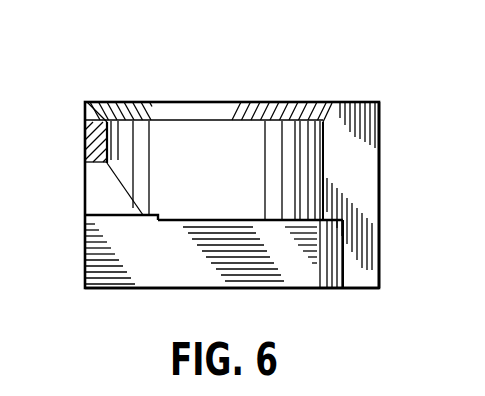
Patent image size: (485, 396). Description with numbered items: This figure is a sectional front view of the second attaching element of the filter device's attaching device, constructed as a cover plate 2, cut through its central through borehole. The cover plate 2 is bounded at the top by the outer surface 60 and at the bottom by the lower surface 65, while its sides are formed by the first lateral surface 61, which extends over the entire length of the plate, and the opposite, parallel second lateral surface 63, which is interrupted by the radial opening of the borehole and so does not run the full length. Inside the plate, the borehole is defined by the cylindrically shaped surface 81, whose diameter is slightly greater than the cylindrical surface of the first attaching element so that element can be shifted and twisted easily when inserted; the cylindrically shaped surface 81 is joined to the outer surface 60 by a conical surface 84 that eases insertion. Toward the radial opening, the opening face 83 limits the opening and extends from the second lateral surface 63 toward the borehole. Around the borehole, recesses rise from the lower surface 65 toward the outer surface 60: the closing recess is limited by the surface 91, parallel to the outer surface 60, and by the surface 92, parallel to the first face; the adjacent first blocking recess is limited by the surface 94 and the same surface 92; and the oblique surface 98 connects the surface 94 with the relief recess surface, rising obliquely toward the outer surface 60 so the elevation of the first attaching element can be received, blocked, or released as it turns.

The cover plate 2 is at (104, 66).
The outer surface 60 is at (207, 101).
The conical surface 84 is at (233, 108).
The first lateral surface 61 is at (85, 153).
The oblique surface 98 is at (105, 192).
The cylindrically shaped surface 81 is at (221, 167).
The opening face 83 is at (364, 181).
The surface of first blocking recess 94 is at (156, 214).
The surface of closing recess 91 is at (221, 218).
The surface parallel to first face 92 is at (180, 266).
The lower surface 65 is at (222, 289).
The second lateral surface 63 is at (380, 212).